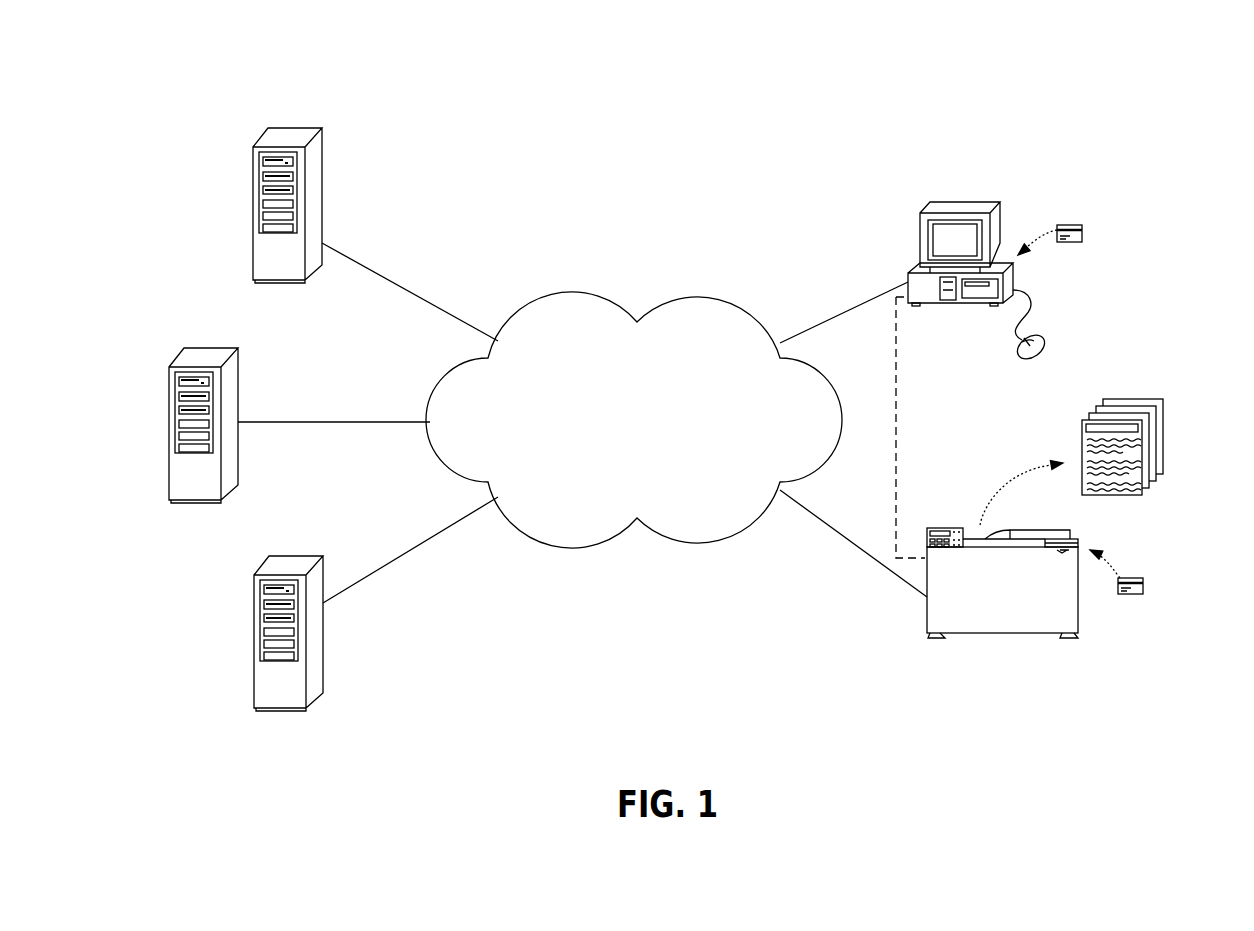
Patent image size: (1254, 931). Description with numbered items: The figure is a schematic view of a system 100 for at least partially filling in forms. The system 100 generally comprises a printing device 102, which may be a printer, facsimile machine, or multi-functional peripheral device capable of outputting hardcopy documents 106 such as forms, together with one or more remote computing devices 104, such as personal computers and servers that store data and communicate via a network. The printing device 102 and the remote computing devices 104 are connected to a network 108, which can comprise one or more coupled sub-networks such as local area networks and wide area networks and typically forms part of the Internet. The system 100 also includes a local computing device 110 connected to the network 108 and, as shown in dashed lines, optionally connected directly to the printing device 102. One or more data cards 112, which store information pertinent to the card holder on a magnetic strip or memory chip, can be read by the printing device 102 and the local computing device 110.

The system 100 is at (1151, 96).
The printing device 102 is at (1102, 657).
The remote computing devices 104 is at (341, 129).
The hardcopy documents 106 is at (1138, 398).
The network 108 is at (622, 442).
The local computing device 110 is at (1028, 205).
The data cards 112 is at (1095, 218).